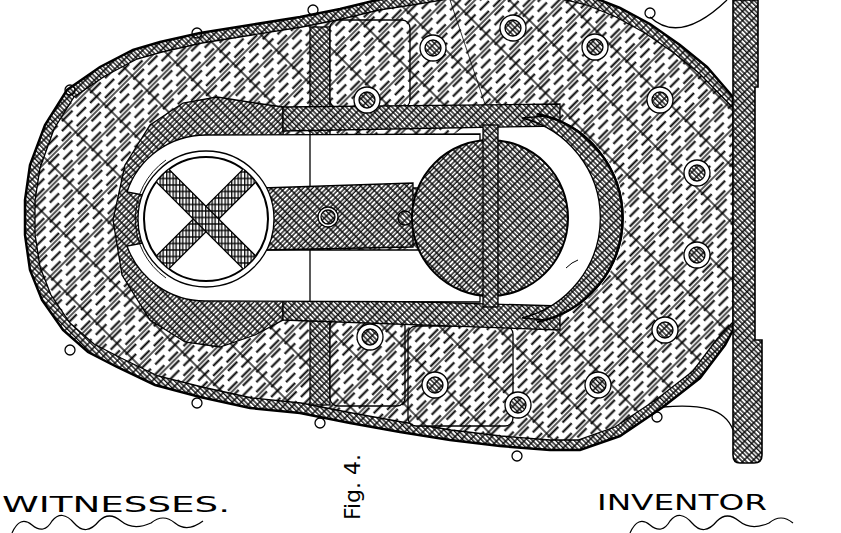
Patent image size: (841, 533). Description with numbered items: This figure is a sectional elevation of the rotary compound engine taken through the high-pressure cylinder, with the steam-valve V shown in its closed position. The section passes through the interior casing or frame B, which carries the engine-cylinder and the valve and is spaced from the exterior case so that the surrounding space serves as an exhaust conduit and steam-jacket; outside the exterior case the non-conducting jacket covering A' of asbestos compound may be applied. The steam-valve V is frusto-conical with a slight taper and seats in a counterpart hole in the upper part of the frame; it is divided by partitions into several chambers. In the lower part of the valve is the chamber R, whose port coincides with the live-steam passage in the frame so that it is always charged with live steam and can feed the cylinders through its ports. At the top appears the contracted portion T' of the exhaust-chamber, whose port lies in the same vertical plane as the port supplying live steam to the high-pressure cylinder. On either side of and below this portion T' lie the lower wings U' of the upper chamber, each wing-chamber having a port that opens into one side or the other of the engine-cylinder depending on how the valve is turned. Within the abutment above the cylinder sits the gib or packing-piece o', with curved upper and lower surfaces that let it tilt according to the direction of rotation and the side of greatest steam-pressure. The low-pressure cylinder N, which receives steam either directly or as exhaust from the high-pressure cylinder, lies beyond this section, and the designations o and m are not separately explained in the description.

The steam-valve V is at (162, 165).
The contracted portion of exhaust-chamber T T' is at (204, 219).
The lower wings of chamber U U' is at (206, 218).
The chamber in lower part of valve R is at (206, 219).
The passage o is at (303, 218).
The gib or packing-piece o' is at (337, 210).
The eccentric disc m is at (430, 187).
The low-pressure cylinder N is at (572, 218).
The jacket covering A' is at (379, 225).
The interior casing or frame B is at (423, 503).